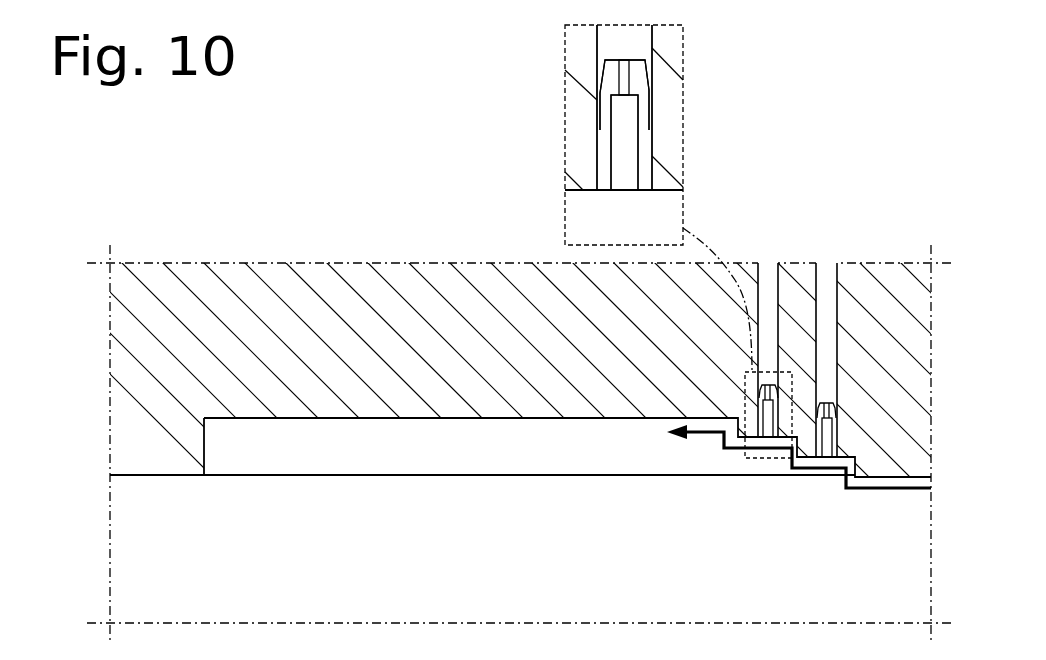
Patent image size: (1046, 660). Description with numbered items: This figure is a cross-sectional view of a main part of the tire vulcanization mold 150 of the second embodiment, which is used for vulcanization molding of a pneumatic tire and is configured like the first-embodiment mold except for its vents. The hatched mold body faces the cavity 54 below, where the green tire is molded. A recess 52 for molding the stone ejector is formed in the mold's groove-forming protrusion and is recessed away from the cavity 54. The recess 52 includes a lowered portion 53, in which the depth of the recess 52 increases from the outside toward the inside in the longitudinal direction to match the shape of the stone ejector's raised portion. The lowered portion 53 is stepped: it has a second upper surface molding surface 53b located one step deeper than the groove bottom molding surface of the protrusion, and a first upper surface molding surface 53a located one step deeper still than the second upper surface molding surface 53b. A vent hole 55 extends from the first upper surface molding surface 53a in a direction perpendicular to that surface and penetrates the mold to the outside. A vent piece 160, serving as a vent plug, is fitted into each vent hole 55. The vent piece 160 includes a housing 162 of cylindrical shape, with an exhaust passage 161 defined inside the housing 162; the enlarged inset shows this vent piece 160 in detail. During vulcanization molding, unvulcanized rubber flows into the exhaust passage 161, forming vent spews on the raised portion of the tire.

The recess 52 is at (320, 490).
The lowered portion 53 is at (848, 521).
The first upper surface molding surface 53a is at (752, 457).
The second upper surface molding surface 53b is at (810, 460).
The cavity 54 is at (460, 563).
The vent hole 55 is at (768, 263).
The tire vulcanization mold 150 is at (826, 235).
The vent piece 160 is at (743, 390).
The exhaust passage 161 is at (628, 142).
The housing 162 is at (646, 81).